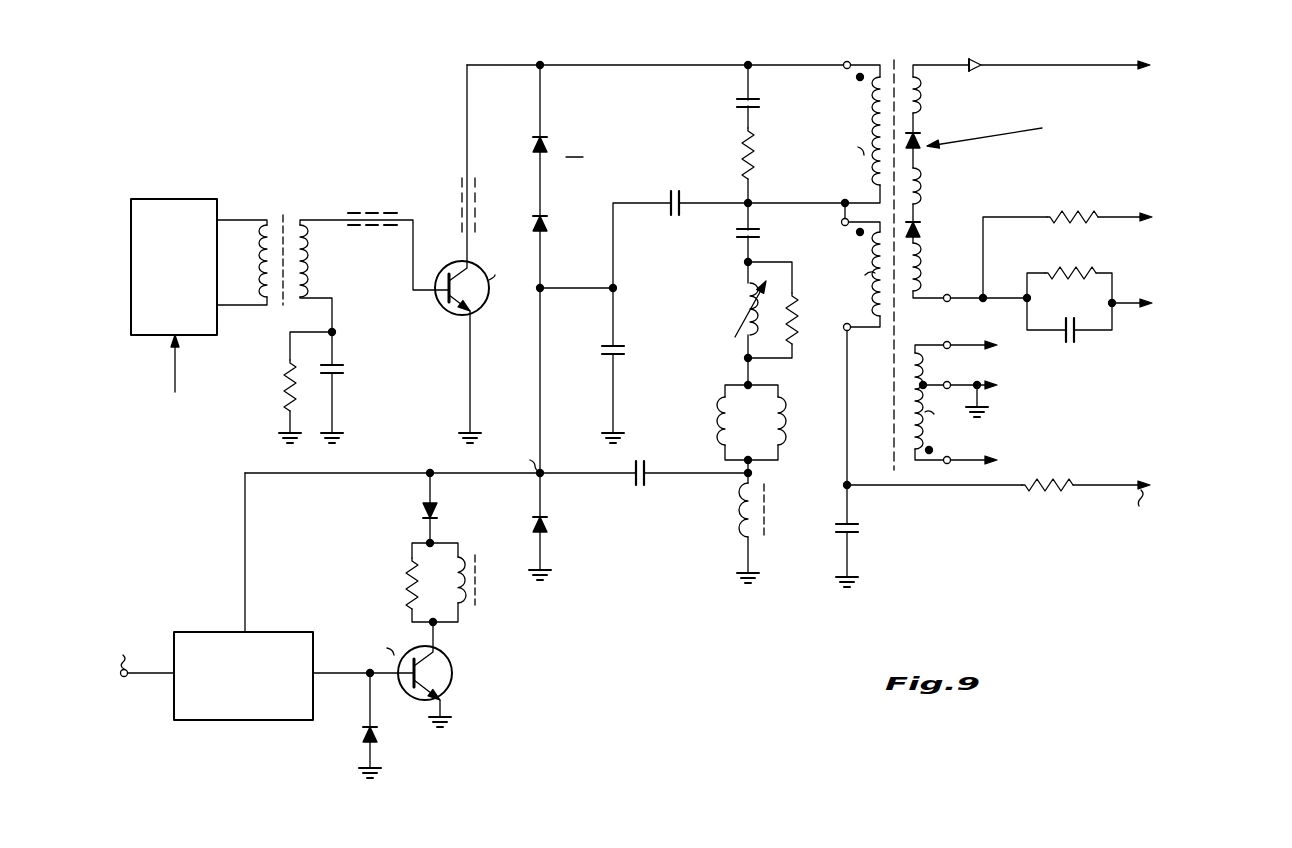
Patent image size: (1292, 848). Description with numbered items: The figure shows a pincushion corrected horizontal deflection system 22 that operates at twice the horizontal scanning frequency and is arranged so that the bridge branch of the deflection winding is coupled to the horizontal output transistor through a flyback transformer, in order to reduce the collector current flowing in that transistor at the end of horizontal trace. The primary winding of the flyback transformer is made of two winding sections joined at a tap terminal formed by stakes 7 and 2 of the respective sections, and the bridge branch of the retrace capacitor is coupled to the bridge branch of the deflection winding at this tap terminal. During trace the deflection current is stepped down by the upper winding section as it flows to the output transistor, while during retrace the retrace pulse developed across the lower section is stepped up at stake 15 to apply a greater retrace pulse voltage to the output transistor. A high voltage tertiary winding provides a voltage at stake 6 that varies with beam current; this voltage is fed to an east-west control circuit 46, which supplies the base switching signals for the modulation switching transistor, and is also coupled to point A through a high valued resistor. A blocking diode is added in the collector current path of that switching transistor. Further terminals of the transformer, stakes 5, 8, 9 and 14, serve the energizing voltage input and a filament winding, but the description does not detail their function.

The horizontal deflection system 22 is at (345, 142).
The east-west control circuit 46 is at (193, 633).
The stake of flyback transformer 15 is at (854, 50).
The stake of winding section 7 is at (846, 191).
The stake of winding section 2 is at (846, 234).
The transformer T1 terminal 5 is at (850, 318).
The stake of high voltage tertiary winding 6 is at (947, 288).
The transformer T1 terminal 8 is at (947, 335).
The transformer T1 terminal 9 is at (947, 375).
The transformer T1 terminal 14 is at (952, 448).